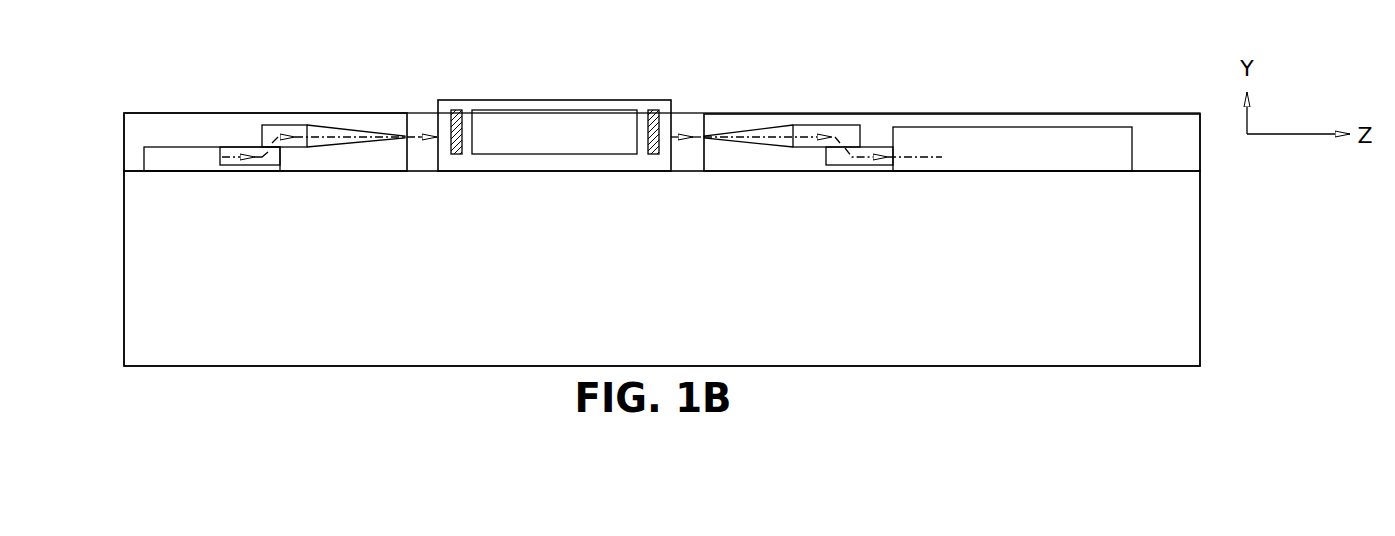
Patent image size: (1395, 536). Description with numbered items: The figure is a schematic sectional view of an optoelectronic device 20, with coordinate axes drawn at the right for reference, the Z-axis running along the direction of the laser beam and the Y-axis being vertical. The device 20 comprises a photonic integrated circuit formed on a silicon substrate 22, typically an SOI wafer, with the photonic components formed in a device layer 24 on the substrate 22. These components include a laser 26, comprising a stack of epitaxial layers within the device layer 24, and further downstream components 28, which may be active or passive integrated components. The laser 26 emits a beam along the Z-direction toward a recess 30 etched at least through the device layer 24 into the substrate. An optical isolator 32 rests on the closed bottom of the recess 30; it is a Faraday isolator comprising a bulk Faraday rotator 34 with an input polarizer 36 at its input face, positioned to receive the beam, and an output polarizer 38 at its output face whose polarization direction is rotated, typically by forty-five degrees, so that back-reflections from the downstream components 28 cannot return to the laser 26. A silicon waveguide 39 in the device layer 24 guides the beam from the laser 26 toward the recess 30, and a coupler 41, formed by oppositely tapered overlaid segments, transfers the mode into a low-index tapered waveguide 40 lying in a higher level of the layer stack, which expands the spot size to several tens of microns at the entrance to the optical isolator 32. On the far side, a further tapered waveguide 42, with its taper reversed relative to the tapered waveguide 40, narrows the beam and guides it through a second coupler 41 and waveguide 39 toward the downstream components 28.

The optoelectronic device 20 is at (133, 102).
The silicon substrate 22 is at (122, 232).
The device layer 24 is at (122, 131).
The laser 26 is at (187, 123).
The downstream components 28 is at (1030, 125).
The recess 30 is at (683, 147).
The optical isolator 32 is at (572, 100).
The bulk Faraday rotator 34 is at (563, 154).
The input polarizer 36 is at (455, 110).
The output polarizer 38 is at (657, 110).
The waveguide 39 is at (253, 172).
The tapered waveguide 40 is at (352, 126).
The coupler 41 is at (307, 107).
The further tapered waveguide 42 is at (781, 125).